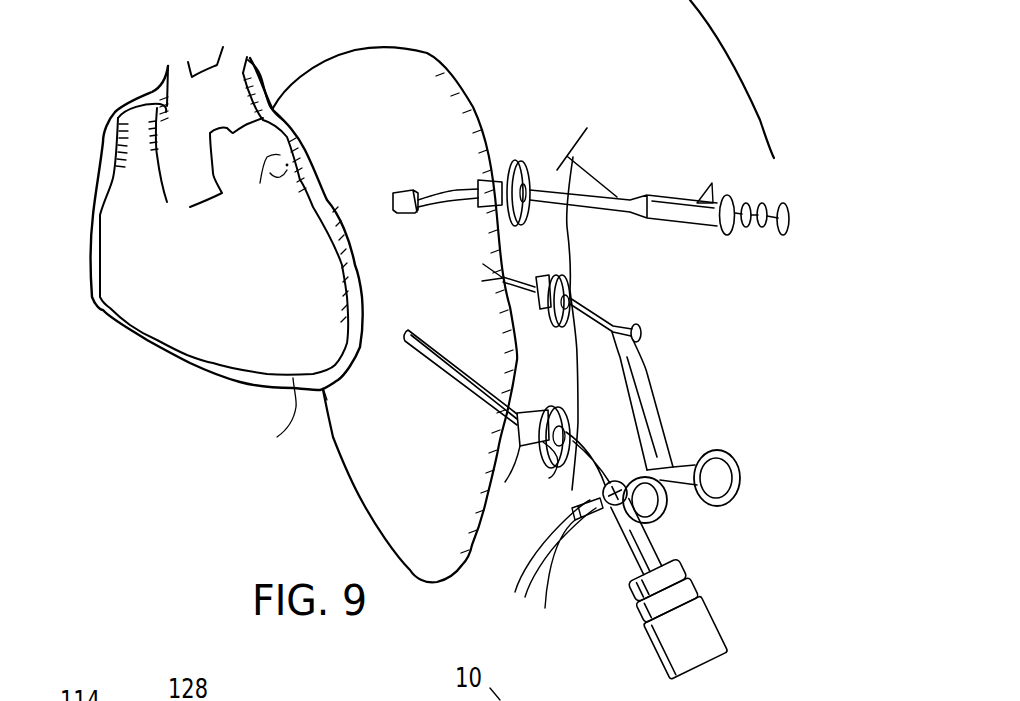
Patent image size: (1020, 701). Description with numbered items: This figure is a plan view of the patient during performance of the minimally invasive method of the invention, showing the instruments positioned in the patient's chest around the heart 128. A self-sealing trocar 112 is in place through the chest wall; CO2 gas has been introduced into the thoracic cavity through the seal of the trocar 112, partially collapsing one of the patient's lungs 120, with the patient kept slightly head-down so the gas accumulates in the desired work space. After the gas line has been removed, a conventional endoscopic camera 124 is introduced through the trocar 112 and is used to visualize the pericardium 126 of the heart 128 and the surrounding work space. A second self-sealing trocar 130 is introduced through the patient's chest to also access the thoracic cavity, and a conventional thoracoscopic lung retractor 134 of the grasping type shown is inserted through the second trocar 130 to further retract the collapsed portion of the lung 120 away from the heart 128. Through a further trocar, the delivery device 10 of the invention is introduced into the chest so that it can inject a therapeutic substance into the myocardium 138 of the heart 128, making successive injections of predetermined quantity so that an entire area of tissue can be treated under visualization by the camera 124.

The delivery device 10 is at (673, 186).
The trocar 112 is at (524, 437).
The lung 120 is at (347, 463).
The endoscopic camera 124 is at (700, 587).
The pericardium 126 is at (257, 387).
The heart 128 is at (131, 353).
The second self-sealing trocar 130 is at (570, 273).
The thoracoscopic lung retractor 134 is at (647, 373).
The myocardium 138 is at (280, 418).